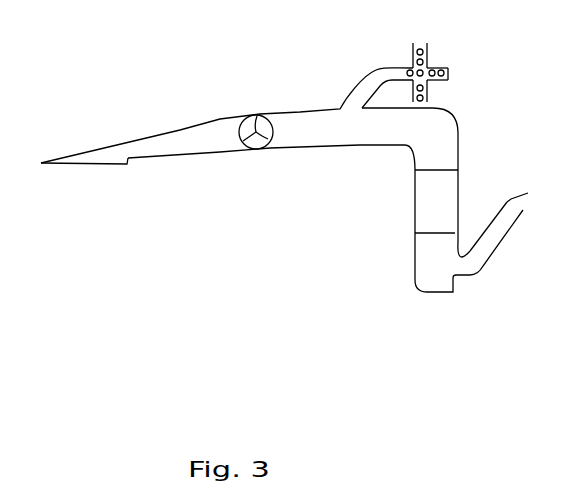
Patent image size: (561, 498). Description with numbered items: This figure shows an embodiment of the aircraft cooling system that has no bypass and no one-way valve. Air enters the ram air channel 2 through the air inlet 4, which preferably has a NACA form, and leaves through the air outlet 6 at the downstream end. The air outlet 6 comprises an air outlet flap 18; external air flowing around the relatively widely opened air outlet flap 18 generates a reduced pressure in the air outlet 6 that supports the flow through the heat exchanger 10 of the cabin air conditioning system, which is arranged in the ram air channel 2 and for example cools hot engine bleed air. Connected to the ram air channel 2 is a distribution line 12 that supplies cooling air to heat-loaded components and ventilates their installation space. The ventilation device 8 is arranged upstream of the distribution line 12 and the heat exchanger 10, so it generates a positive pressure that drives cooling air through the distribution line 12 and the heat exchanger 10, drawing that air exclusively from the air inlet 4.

The ram air channel 2 is at (318, 122).
The air inlet 4 is at (85, 166).
The ventilation device 8 is at (248, 118).
The heat exchanger 10 is at (425, 202).
The distribution line 12 is at (437, 63).
The air outlet 6 is at (487, 252).
The air outlet flap 18 is at (520, 193).